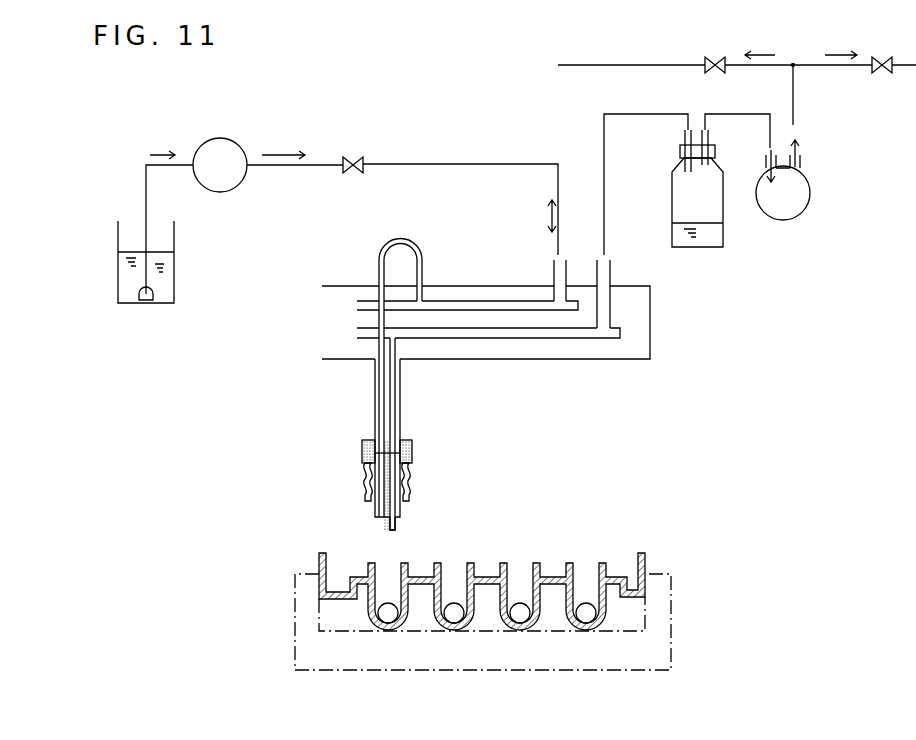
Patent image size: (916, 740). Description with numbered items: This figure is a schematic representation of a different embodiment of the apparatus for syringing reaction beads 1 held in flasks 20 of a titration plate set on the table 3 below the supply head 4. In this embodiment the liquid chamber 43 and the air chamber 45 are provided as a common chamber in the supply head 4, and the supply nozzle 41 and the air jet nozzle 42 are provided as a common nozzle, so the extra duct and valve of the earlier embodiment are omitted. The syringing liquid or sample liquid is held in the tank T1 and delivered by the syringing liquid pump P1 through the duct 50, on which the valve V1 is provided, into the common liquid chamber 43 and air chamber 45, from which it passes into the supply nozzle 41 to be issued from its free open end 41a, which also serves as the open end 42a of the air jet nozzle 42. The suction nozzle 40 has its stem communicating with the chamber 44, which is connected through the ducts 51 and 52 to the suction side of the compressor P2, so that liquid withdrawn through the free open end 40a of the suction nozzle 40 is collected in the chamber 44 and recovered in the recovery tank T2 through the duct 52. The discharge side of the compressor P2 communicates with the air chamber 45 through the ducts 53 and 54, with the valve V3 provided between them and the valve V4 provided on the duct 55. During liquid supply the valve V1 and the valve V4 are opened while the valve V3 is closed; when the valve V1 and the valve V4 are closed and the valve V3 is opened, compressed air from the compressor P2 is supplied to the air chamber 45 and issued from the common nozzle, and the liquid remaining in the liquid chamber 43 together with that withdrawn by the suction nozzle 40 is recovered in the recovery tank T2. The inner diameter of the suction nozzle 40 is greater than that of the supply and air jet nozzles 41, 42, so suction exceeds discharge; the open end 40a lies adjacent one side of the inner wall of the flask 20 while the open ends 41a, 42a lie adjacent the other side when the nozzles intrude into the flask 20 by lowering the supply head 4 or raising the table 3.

The reaction bead 1 is at (552, 680).
The table 3 is at (671, 608).
The supply head 4 is at (661, 336).
The flask 20 is at (405, 565).
The suction nozzle 40 is at (396, 393).
The free open end of the suction nozzle 40a is at (395, 524).
The supply nozzle 41 is at (343, 378).
The air jet nozzle 42 is at (379, 378).
The free open end of the supply nozzle 41a is at (313, 485).
The free open end of the air jet nozzle 42a is at (380, 520).
The liquid chamber 43 is at (488, 348).
The air chamber 45 is at (527, 304).
The chamber 44 is at (603, 302).
The duct 50 is at (557, 178).
The duct 51 is at (735, 113).
The duct 52 is at (607, 136).
The duct 53 is at (793, 98).
The duct 54 is at (611, 62).
The duct 55 is at (835, 70).
The syringing liquid pump P1 is at (238, 172).
The compressor P2 is at (800, 195).
The syringing liquid tank T1 is at (168, 288).
The recovery tank T2 is at (717, 230).
The valve V1 is at (352, 174).
The valve V3 is at (713, 58).
The valve V4 is at (878, 78).